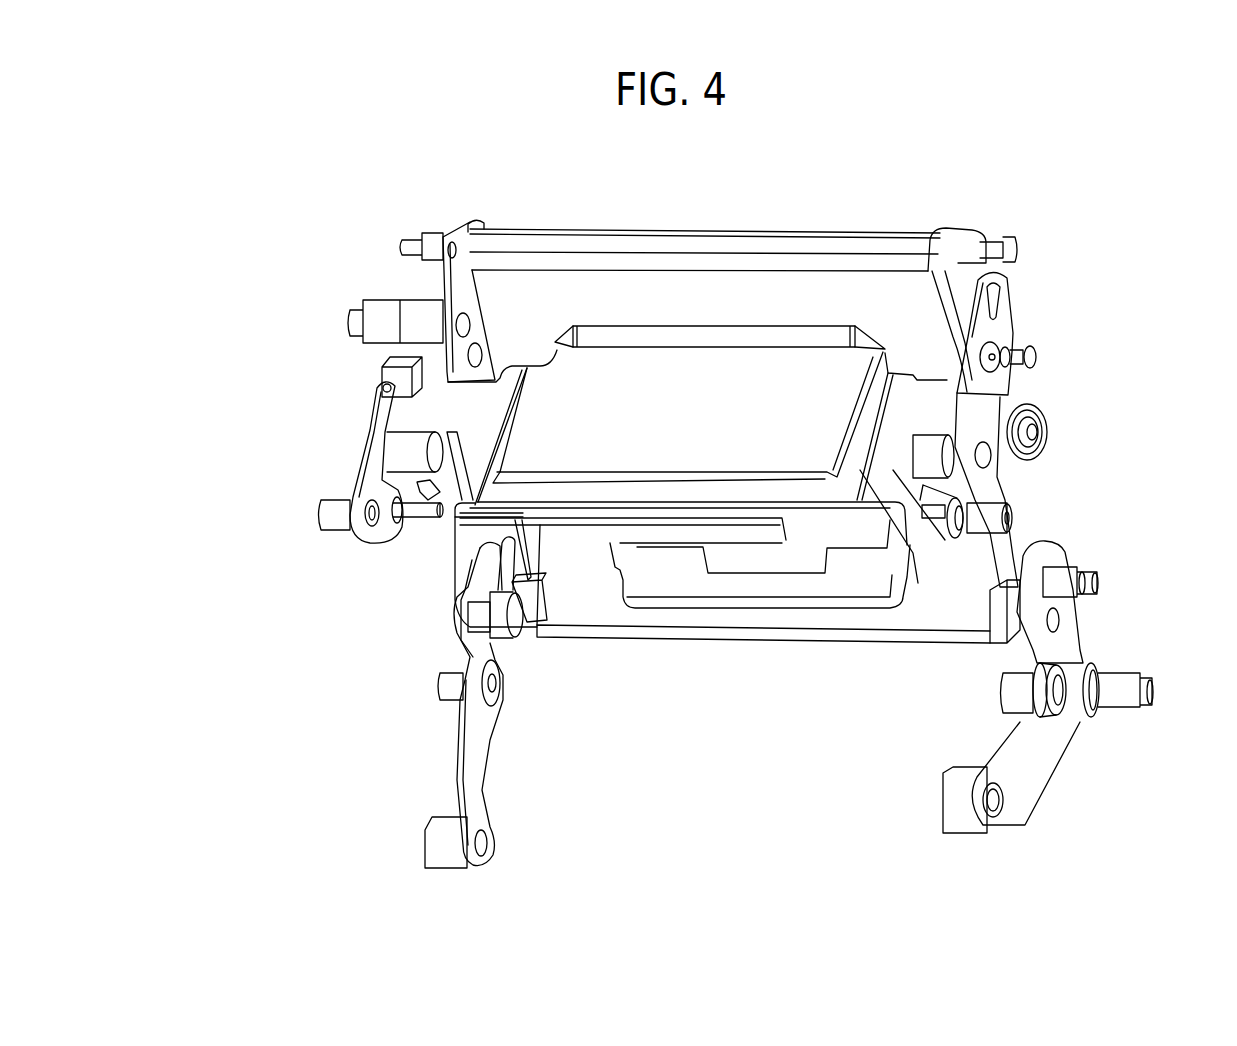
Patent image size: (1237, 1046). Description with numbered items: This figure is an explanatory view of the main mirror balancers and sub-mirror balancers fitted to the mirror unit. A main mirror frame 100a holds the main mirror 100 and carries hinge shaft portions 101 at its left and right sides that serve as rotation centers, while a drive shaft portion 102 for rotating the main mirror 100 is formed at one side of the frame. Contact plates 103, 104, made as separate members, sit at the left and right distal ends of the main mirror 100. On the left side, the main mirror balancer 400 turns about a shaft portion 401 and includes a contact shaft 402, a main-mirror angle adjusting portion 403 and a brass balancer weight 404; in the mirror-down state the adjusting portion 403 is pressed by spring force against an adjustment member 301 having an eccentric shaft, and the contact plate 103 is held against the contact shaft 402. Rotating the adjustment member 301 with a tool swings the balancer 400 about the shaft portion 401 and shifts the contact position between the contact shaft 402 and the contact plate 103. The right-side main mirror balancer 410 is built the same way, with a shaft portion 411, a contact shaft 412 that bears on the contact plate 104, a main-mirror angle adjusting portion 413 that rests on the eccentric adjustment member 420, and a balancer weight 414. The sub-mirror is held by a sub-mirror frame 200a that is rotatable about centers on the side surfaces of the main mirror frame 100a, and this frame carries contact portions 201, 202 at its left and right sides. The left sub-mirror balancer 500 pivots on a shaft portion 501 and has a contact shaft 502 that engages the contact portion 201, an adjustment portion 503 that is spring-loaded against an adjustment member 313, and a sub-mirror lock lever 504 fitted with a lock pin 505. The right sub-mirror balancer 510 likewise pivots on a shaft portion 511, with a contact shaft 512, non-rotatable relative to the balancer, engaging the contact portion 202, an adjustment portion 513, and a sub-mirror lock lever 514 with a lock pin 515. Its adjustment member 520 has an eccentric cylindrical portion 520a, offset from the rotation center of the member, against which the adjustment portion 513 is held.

The main mirror 100 is at (752, 565).
The main mirror frame 100a is at (585, 612).
The hinge shaft portion 101 is at (412, 247).
The drive shaft portion 102 is at (385, 307).
The contact plate 103 is at (537, 605).
The contact plate 104 is at (1000, 615).
The sub-mirror frame 200a is at (682, 455).
The contact portion 201 is at (396, 475).
The contact portion 202 is at (967, 503).
The adjustment member 301 is at (515, 540).
The adjustment member 313 is at (400, 380).
The main mirror balancer 400 is at (470, 767).
The shaft portion 401 is at (447, 680).
The contact shaft 402 is at (497, 612).
The main-mirror angle adjusting portion 403 is at (505, 560).
The balancer weight 404 is at (448, 835).
The main mirror balancer 410 is at (1043, 757).
The shaft portion 411 is at (1100, 695).
The contact shaft 412 is at (1063, 620).
The main-mirror angle adjusting portion 413 is at (1030, 720).
The balancer weight 414 is at (955, 805).
The adjustment member 420 is at (1010, 695).
The sub-mirror balancer 500 is at (375, 400).
The shaft portion 501 is at (332, 512).
The contact shaft 502 is at (410, 440).
The adjustment portion 503 is at (386, 383).
The sub-mirror lock lever 504 is at (390, 488).
The lock pin 505 is at (405, 523).
The sub-mirror balancer 510 is at (960, 485).
The shaft portion 511 is at (1000, 520).
The contact shaft 512 is at (1020, 432).
The adjustment portion 513 is at (1005, 403).
The sub-mirror lock lever 514 is at (940, 452).
The lock pin 515 is at (937, 515).
The adjustment member 520 is at (1010, 405).
The eccentric cylindrical portion 520a is at (1005, 403).